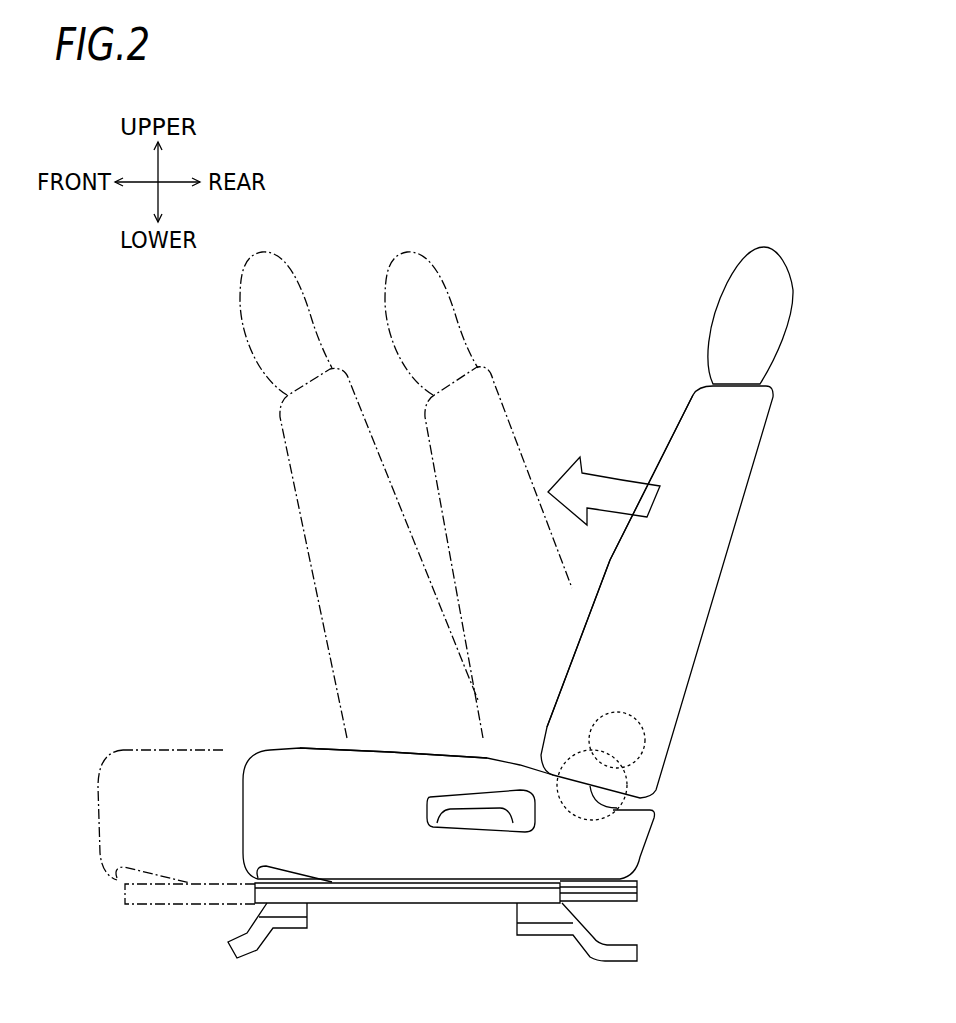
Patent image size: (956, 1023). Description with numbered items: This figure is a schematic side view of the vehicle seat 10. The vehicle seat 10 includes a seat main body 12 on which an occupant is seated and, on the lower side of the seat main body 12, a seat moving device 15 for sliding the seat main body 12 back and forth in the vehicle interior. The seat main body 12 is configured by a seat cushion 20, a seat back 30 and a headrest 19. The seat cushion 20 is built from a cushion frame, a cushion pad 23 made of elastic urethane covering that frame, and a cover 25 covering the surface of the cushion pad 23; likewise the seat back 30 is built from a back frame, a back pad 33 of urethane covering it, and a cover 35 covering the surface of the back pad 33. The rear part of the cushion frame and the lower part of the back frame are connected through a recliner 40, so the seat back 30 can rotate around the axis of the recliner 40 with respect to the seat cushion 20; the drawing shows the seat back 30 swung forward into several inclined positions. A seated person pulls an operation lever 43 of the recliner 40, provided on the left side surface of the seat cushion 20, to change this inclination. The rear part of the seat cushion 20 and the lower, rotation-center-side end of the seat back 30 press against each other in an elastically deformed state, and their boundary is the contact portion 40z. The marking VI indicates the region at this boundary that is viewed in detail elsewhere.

The vehicle seat 10 is at (464, 607).
The seat main body 12 is at (725, 588).
The seat moving device 15 is at (383, 906).
The headrest 19 is at (733, 300).
The seat cushion 20 is at (153, 763).
The cushion pad 23 is at (393, 702).
The cover 25 is at (373, 753).
The seat back 30 is at (490, 407).
The back pad 33 is at (648, 450).
The cover 35 is at (687, 445).
The recliner 40 is at (643, 742).
The contact portion 40z is at (613, 808).
The operation lever 43 is at (480, 818).
The section view indicator VI is at (607, 815).